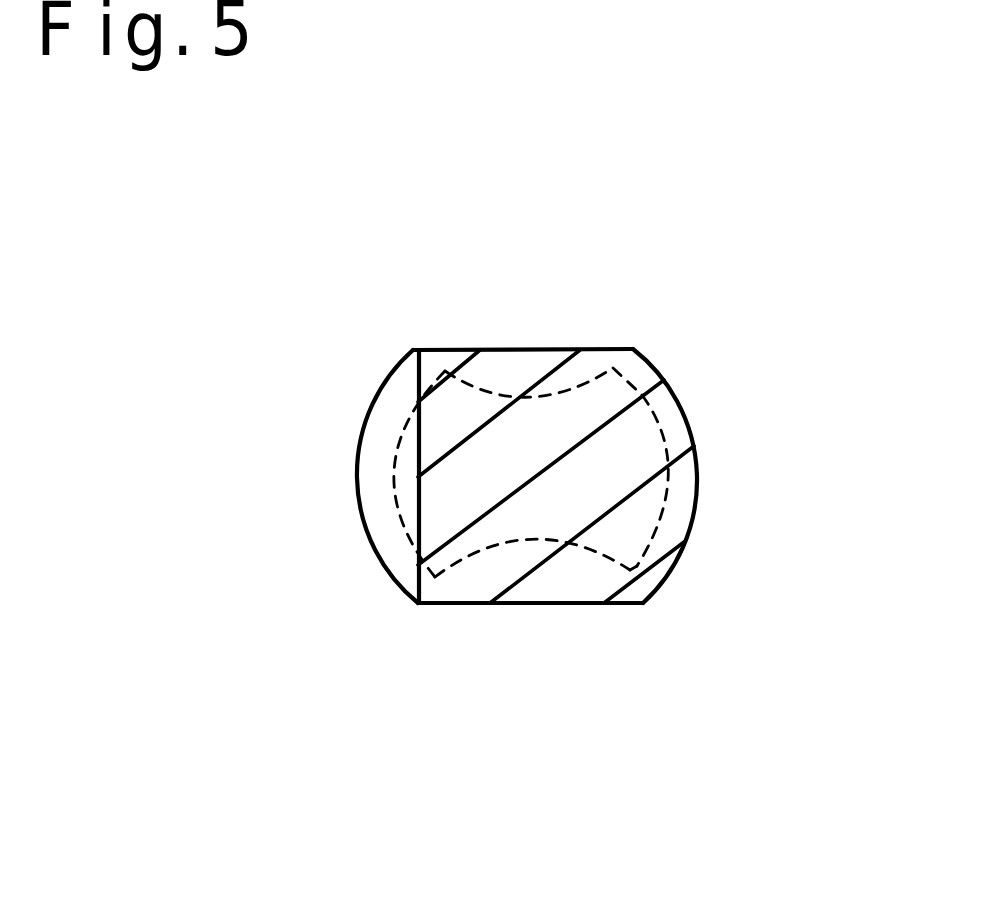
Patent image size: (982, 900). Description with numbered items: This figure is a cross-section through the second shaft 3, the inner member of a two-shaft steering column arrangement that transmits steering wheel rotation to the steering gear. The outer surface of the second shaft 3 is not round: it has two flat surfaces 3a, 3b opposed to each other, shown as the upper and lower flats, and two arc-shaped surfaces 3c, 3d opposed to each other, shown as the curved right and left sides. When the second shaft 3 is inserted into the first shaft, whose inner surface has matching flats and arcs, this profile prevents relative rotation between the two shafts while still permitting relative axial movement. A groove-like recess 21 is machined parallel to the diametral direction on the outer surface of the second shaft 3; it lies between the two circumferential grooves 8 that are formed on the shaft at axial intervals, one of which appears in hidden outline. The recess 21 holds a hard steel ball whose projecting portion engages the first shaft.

The second shaft 3 is at (547, 347).
The flat surface 3a is at (475, 348).
The flat surface 3b is at (507, 603).
The arc-shaped surface 3c is at (693, 424).
The arc-shaped surface 3d is at (370, 412).
The groove-like recess 21 is at (375, 509).
The circumferential groove 8 is at (587, 553).